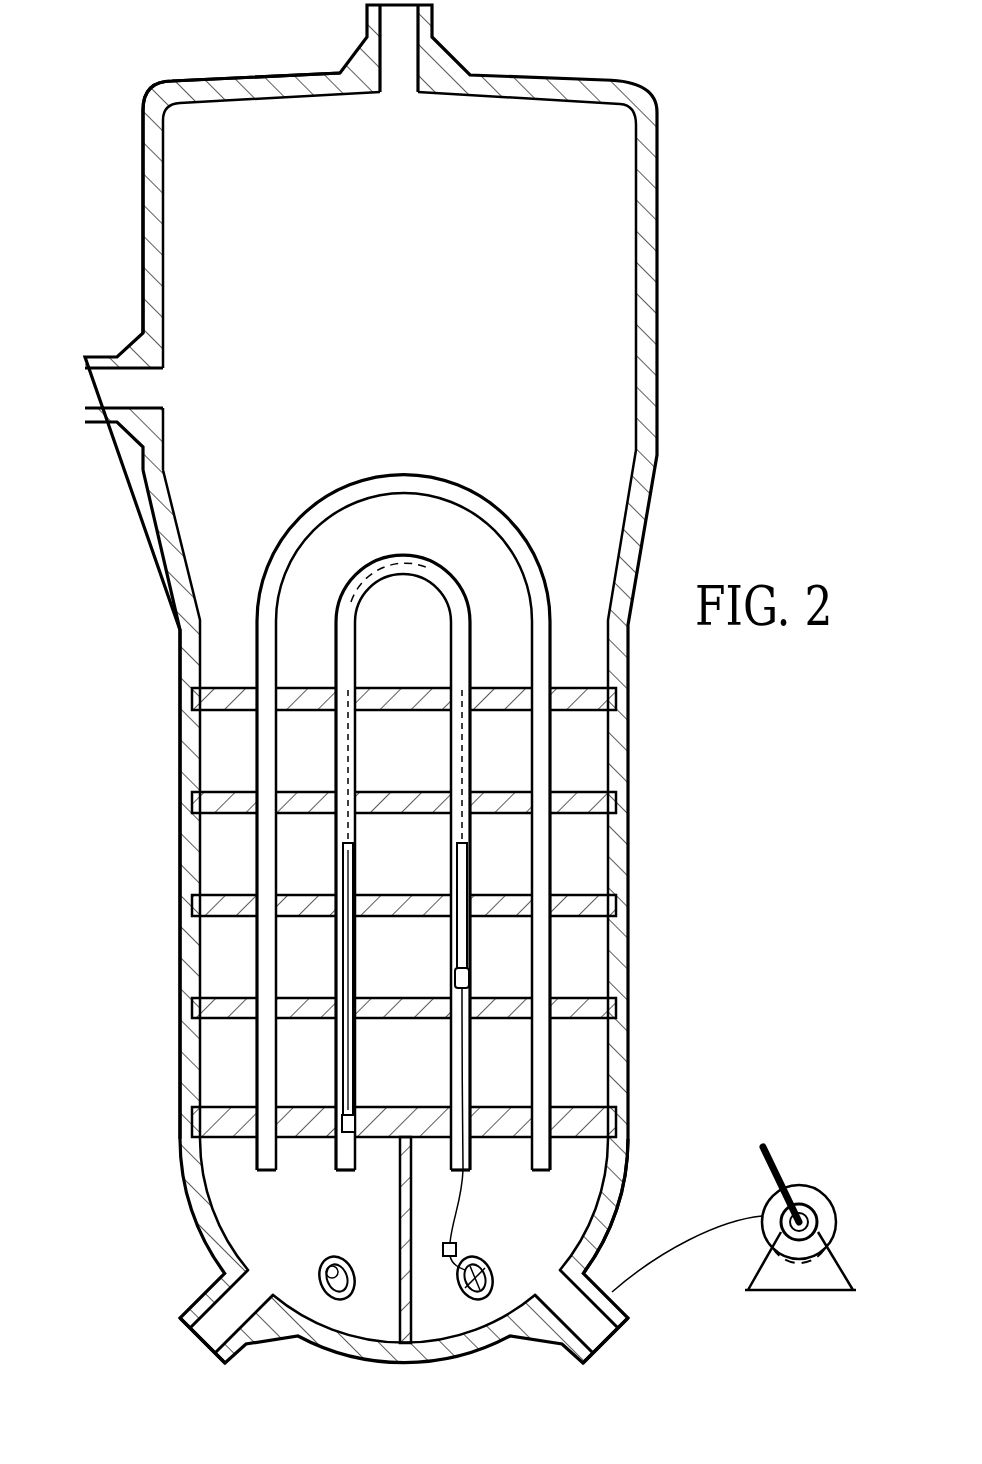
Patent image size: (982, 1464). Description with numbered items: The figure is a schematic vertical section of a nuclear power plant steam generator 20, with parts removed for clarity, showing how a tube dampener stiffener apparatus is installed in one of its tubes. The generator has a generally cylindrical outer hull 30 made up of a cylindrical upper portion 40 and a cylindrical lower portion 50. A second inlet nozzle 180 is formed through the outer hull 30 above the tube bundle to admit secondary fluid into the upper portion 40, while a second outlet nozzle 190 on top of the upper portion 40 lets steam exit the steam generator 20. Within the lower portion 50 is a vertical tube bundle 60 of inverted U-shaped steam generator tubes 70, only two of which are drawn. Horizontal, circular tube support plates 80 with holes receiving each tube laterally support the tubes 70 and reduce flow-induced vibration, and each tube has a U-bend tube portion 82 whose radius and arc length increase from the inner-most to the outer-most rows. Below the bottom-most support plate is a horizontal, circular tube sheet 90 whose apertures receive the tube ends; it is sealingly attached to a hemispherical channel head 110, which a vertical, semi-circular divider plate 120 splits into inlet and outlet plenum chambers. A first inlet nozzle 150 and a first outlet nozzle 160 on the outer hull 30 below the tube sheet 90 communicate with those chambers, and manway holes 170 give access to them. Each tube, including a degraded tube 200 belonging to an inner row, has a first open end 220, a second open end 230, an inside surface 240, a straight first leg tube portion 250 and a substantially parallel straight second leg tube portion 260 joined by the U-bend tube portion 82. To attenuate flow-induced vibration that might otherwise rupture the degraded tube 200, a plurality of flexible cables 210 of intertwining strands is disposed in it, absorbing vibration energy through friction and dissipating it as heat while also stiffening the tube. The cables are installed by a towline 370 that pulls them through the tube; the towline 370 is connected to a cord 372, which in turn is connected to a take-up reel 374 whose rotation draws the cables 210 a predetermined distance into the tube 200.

The steam generator 20 is at (683, 135).
The outer hull 30 is at (660, 305).
The upper portion 40 is at (155, 148).
The lower portion 50 is at (190, 972).
The tube bundle 60 is at (592, 857).
The steam generator tubes 70 is at (483, 498).
The tube support plates 80 is at (590, 688).
The U-bend tube portion 82 is at (395, 563).
The tube sheet 90 is at (614, 1125).
The channel head 110 is at (622, 1218).
The divider plate 120 is at (400, 1257).
The first inlet nozzle 150 is at (195, 1302).
The first outlet nozzle 160 is at (622, 1325).
The manway holes 170 is at (345, 1265).
The second inlet nozzle 180 is at (113, 362).
The second outlet nozzle 190 is at (372, 33).
The degraded tube 200 is at (452, 735).
The flexible cables 210 is at (457, 877).
The first open end 220 is at (347, 1150).
The second open end 230 is at (467, 1165).
The inside surface 240 is at (345, 735).
The first leg tube portion 250 is at (345, 980).
The second leg tube portion 260 is at (455, 985).
The towline 370 is at (455, 1245).
The cord 372 is at (460, 1288).
The take-up reel 374 is at (830, 1205).